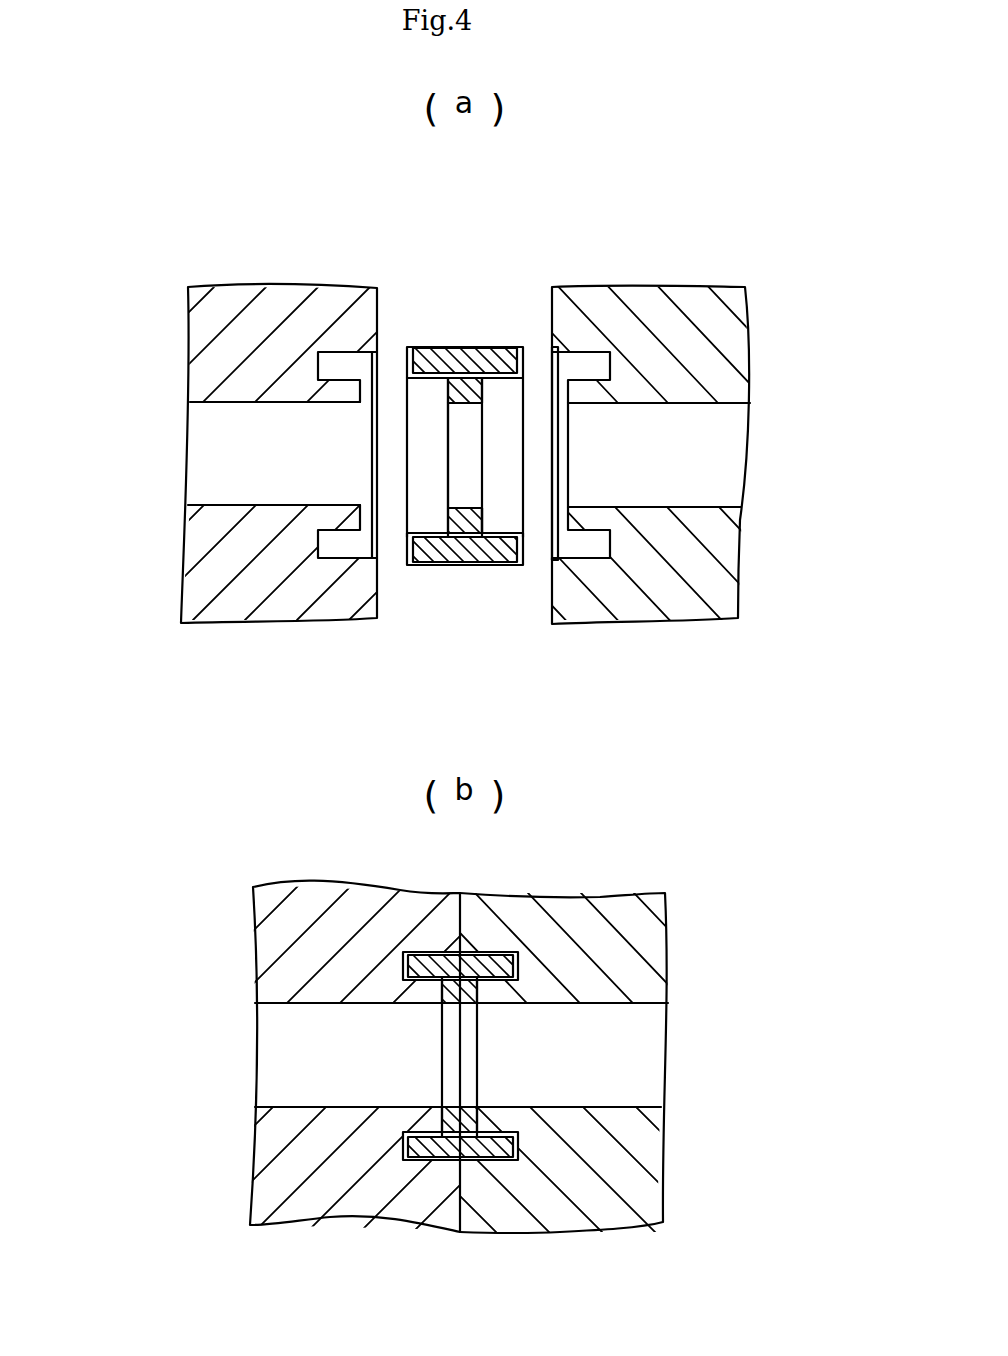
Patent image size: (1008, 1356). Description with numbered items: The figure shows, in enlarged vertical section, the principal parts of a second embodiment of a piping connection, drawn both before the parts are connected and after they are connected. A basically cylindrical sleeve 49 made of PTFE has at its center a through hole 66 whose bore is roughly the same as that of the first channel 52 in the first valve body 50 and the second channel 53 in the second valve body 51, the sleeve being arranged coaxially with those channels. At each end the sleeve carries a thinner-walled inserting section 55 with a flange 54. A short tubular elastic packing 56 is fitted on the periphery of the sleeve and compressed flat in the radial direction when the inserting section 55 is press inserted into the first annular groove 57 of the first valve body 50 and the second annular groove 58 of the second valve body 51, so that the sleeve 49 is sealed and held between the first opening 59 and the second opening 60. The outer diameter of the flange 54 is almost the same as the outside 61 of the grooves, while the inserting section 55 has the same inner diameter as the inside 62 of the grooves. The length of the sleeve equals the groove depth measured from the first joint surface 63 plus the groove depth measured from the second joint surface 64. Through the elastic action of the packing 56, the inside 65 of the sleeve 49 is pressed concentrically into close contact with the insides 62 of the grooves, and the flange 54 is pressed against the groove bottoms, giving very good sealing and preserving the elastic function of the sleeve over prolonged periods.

The sleeve 49 is at (470, 347).
The first valve body 50 is at (222, 595).
The second valve body 51 is at (688, 602).
The first channel 52 is at (220, 475).
The second channel 53 is at (698, 463).
The flange 54 is at (407, 347).
The inserting section 55 is at (412, 565).
The packing 56 is at (507, 347).
The first annular groove 57 is at (318, 357).
The second annular groove 58 is at (600, 362).
The first opening 59 is at (399, 553).
The second opening 60 is at (544, 545).
The outside of the annular grooves 61 is at (600, 347).
The inside of the annular grooves 62 is at (618, 403).
The first joint surface 63 is at (375, 558).
The second joint surface 64 is at (549, 550).
The inside of the sleeve 65 is at (507, 518).
The through hole 66 is at (470, 438).